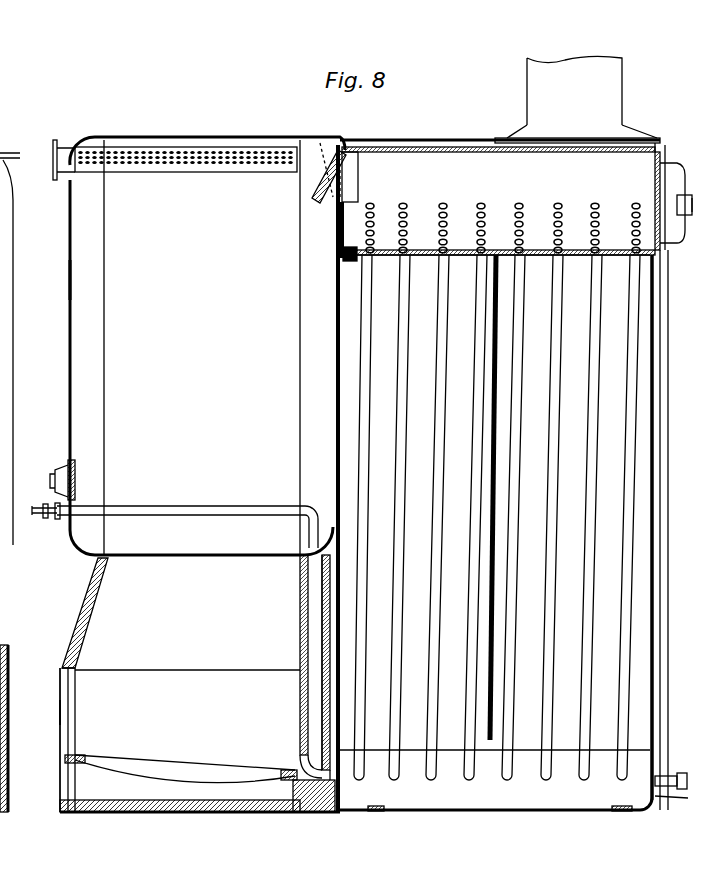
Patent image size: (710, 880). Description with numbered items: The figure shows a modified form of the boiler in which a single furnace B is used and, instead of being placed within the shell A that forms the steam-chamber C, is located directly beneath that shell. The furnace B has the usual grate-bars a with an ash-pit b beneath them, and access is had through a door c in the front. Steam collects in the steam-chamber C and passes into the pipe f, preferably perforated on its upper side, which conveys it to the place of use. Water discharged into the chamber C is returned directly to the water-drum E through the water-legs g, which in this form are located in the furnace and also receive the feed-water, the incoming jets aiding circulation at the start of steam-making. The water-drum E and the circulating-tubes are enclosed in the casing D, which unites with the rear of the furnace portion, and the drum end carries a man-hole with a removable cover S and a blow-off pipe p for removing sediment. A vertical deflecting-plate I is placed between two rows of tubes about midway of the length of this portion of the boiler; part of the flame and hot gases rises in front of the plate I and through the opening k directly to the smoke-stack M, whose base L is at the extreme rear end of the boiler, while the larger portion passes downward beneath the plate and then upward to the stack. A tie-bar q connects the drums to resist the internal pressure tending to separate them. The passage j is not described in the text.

The steam-chamber C is at (207, 474).
The pipe f is at (186, 168).
The shell A is at (70, 279).
The base of the smoke-stack L is at (175, 519).
The connecting passage j is at (318, 173).
The smoke-stack M is at (577, 99).
The water-drum E is at (497, 150).
The removable cover S is at (670, 220).
The ash-pit b is at (400, 207).
The deflecting-plate I is at (497, 546).
The opening k is at (500, 262).
The casing D is at (656, 590).
The water-leg g is at (666, 500).
The furnace B is at (200, 685).
The door c is at (60, 711).
The grate-bars a is at (181, 769).
The tie-bar q is at (378, 808).
The blow-off pipe p is at (656, 803).